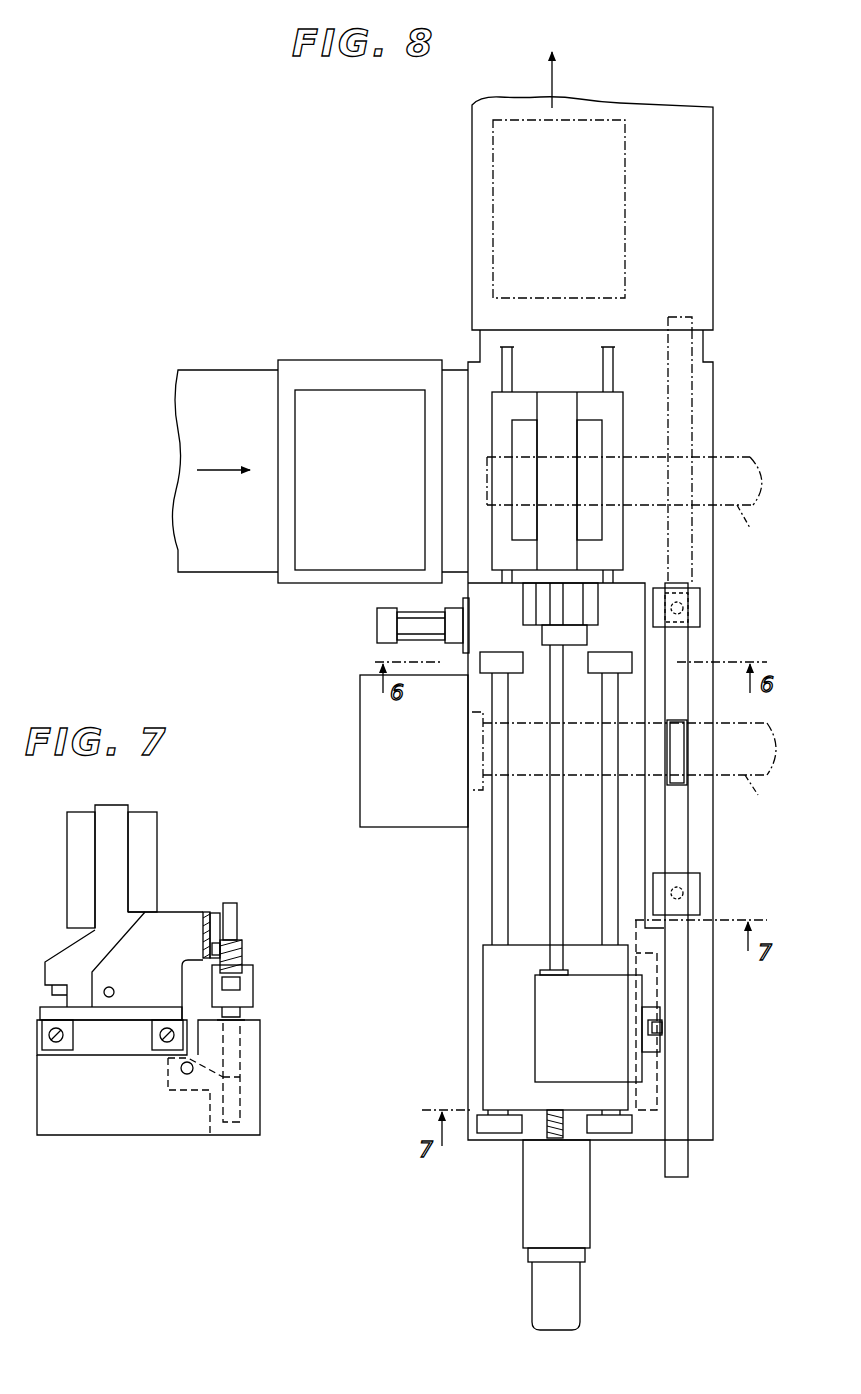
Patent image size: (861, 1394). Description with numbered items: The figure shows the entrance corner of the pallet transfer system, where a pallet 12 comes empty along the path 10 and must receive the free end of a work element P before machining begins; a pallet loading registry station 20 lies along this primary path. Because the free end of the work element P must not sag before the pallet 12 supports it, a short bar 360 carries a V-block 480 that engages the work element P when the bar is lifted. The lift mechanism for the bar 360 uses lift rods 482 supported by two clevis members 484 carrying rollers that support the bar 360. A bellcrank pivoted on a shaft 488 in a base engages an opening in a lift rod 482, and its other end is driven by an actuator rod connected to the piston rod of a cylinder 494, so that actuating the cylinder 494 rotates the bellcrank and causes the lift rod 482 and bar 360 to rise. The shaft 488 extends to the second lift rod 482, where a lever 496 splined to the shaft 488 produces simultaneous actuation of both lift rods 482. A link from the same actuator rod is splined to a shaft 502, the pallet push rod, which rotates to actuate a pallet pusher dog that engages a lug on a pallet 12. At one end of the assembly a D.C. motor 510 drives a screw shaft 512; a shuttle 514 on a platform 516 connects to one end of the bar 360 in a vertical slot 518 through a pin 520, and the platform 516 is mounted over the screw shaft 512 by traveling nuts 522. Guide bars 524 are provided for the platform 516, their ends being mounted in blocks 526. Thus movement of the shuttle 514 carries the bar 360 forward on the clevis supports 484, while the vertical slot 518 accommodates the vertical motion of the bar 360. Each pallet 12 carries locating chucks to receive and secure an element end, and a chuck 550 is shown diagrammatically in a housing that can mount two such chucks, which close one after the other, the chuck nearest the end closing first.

In FIG. 8, the path 10 is at (224, 382).
In FIG. 8, the pallet 12 is at (626, 258).
In FIG. 8, the pallet loading registry station 20 is at (724, 447).
In FIG. 8, the short bar 360 is at (680, 388).
In FIG. 7, the short bar 360 is at (237, 915).
In FIG. 8, the V-block 480 is at (678, 718).
In FIG. 7, the lift rod 482 is at (260, 1048).
In FIG. 8, the clevis member 484 is at (700, 606).
In FIG. 7, the clevis member 484 is at (250, 985).
In FIG. 7, the shaft 488 is at (188, 1075).
In FIG. 8, the cylinder 494 is at (378, 628).
In FIG. 7, the lever 496 is at (260, 1078).
In FIG. 8, the shaft 502 is at (557, 923).
In FIG. 7, the shaft 502 is at (114, 989).
In FIG. 8, the D.C. motor 510 is at (575, 1225).
In FIG. 8, the screw shaft 512 is at (558, 1138).
In FIG. 8, the shuttle 514 is at (597, 1026).
In FIG. 8, the platform 516 is at (496, 1050).
In FIG. 8, the vertical slot 518 is at (648, 1030).
In FIG. 7, the vertical slot 518 is at (213, 912).
In FIG. 8, the pin 520 is at (662, 1028).
In FIG. 7, the pin 520 is at (203, 945).
In FIG. 7, the traveling nut 522 is at (163, 1050).
In FIG. 8, the guide bar 524 is at (613, 883).
In FIG. 8, the block 526 is at (498, 662).
In FIG. 8, the chuck 550 is at (558, 408).
In FIG. 7, the chuck 550 is at (167, 820).
In FIG. 8, the work element P is at (624, 637).